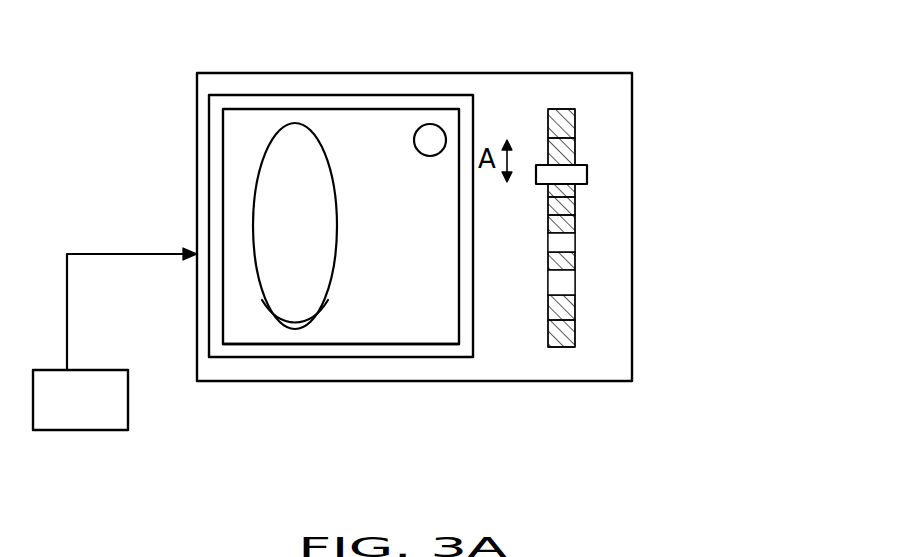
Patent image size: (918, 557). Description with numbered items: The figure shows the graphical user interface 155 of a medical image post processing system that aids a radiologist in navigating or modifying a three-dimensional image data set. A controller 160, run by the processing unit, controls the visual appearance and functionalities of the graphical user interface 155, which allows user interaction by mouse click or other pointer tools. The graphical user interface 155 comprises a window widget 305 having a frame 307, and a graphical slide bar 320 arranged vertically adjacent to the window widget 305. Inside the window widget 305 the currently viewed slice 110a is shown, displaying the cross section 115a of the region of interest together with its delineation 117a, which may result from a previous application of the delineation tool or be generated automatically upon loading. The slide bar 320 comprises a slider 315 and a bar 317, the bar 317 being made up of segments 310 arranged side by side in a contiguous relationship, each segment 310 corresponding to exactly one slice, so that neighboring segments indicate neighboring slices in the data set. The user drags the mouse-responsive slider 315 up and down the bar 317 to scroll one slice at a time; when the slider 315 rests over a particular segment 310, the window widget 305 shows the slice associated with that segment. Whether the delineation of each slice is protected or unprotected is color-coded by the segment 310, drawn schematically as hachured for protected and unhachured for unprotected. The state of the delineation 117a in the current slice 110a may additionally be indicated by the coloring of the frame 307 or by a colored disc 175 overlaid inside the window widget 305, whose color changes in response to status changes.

The graphical user interface 155 is at (632, 355).
The frame 307 is at (452, 100).
The window widget 305 is at (473, 115).
The slice 110a is at (422, 333).
The delineation 117a is at (338, 217).
The cross section 115a is at (305, 280).
The colored disc 175 is at (429, 124).
The controller 160 is at (128, 412).
The bar 317 is at (575, 238).
The segment 310 is at (548, 323).
The graphical slide bar 320 is at (592, 285).
The slider 315 is at (587, 170).